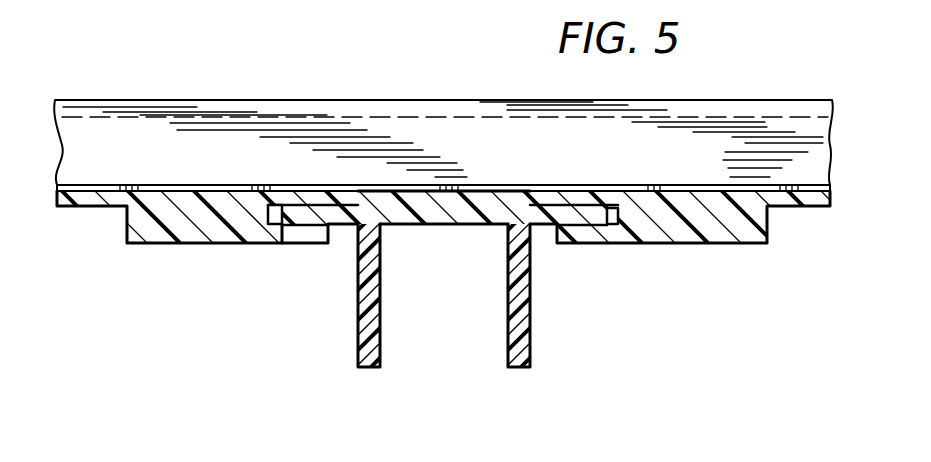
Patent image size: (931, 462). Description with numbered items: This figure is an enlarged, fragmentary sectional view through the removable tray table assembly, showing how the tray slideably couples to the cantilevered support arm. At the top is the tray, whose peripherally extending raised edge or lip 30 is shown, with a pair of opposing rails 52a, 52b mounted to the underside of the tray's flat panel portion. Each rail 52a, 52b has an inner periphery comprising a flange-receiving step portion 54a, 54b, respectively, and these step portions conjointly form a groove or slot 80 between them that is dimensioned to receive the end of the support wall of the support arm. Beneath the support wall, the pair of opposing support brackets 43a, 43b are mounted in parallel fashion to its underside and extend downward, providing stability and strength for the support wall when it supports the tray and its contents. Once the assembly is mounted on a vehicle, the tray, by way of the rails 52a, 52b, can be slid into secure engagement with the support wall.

The raised edge or lip 30 is at (312, 106).
The rail 52a is at (192, 215).
The rail 52b is at (717, 215).
The flange-receiving step portion 54a is at (311, 228).
The flange-receiving step portion 54b is at (595, 235).
The groove or slot 80 is at (275, 226).
The support bracket 43a is at (373, 358).
The support bracket 43b is at (523, 355).